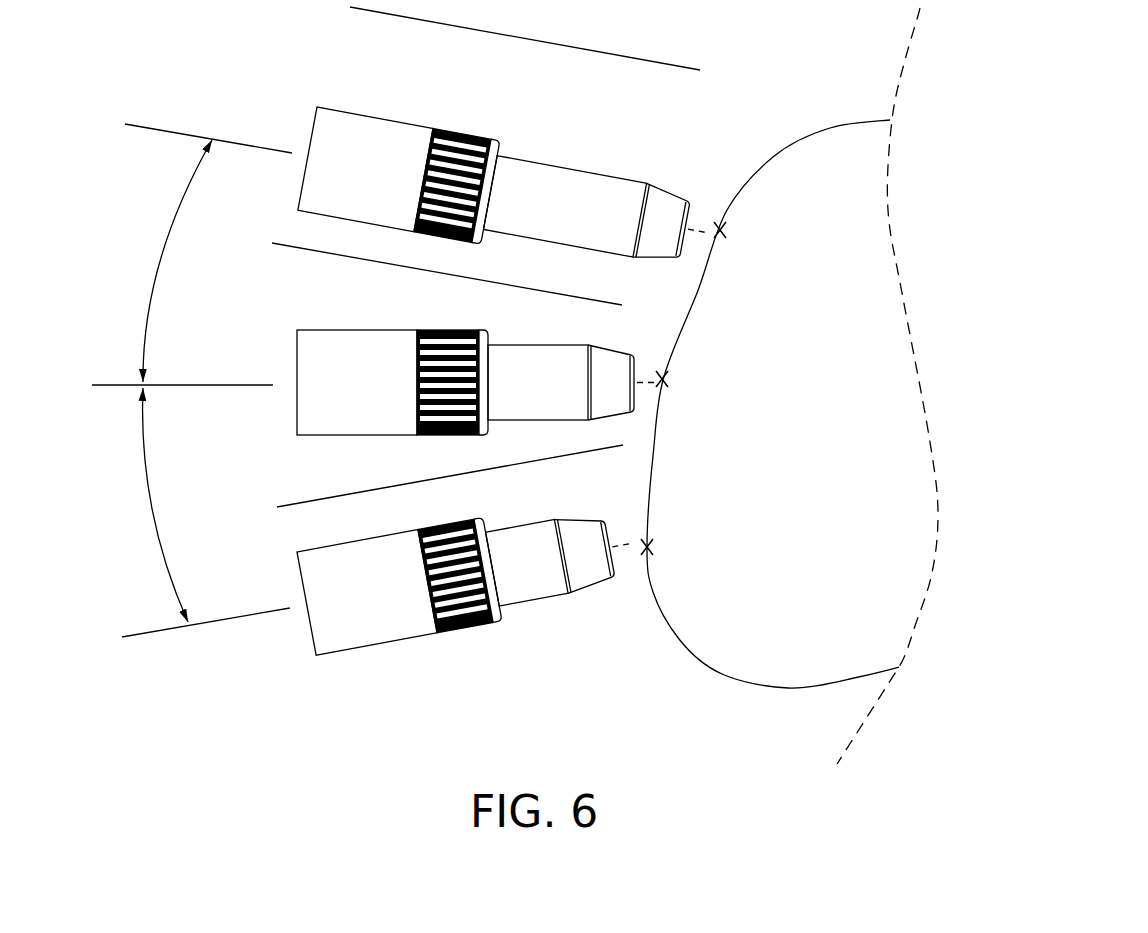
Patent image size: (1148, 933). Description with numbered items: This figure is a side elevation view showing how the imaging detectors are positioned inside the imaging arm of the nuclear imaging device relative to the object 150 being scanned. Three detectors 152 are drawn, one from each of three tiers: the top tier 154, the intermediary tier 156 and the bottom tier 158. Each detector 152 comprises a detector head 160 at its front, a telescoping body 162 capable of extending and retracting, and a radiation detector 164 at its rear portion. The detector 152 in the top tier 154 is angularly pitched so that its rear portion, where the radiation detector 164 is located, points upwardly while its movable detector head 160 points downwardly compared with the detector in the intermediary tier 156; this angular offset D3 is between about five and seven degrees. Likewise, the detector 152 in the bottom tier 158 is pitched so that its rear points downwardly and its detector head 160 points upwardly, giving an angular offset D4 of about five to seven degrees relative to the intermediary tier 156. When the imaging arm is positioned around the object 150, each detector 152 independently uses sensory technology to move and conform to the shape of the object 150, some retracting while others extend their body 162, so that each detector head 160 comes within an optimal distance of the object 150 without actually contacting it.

The object 150 is at (808, 448).
The detector 152 is at (456, 396).
The top tier 154 is at (507, 174).
The intermediary tier 156 is at (454, 317).
The bottom tier 158 is at (469, 519).
The detector head 160 is at (710, 212).
The body 162 is at (587, 211).
The radiation detector 164 is at (365, 169).
The angular offset D3 is at (153, 292).
The angular offset D4 is at (152, 508).